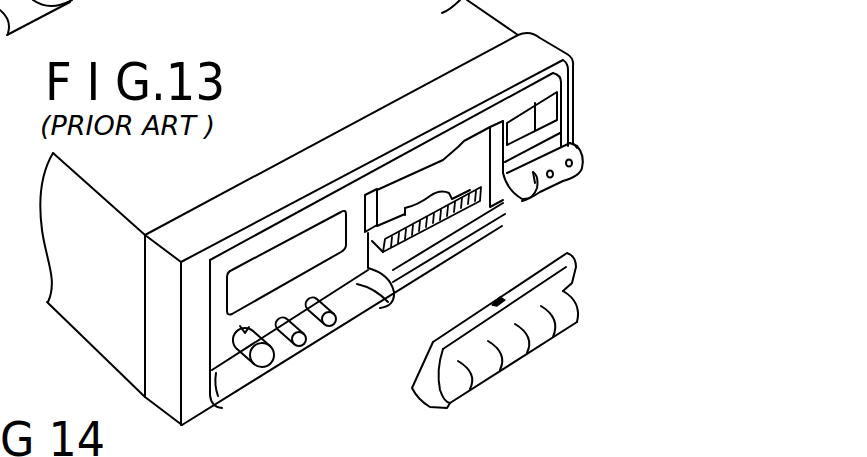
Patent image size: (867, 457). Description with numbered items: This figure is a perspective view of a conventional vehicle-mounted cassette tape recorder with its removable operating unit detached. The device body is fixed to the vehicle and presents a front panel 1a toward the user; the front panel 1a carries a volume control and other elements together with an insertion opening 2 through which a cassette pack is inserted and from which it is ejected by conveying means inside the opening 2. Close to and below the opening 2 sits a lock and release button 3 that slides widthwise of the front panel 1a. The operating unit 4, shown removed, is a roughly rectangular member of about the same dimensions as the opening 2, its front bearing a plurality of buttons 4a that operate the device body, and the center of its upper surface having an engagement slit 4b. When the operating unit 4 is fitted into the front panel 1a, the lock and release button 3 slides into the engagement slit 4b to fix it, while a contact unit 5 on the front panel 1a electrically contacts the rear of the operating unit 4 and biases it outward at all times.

The front panel 1a is at (525, 65).
The insertion opening 2 is at (448, 160).
The lock and release button 3 is at (418, 208).
The operating unit 4 is at (560, 278).
The buttons 4a is at (545, 330).
The engagement slit 4b is at (499, 301).
The contact unit 5 is at (413, 214).